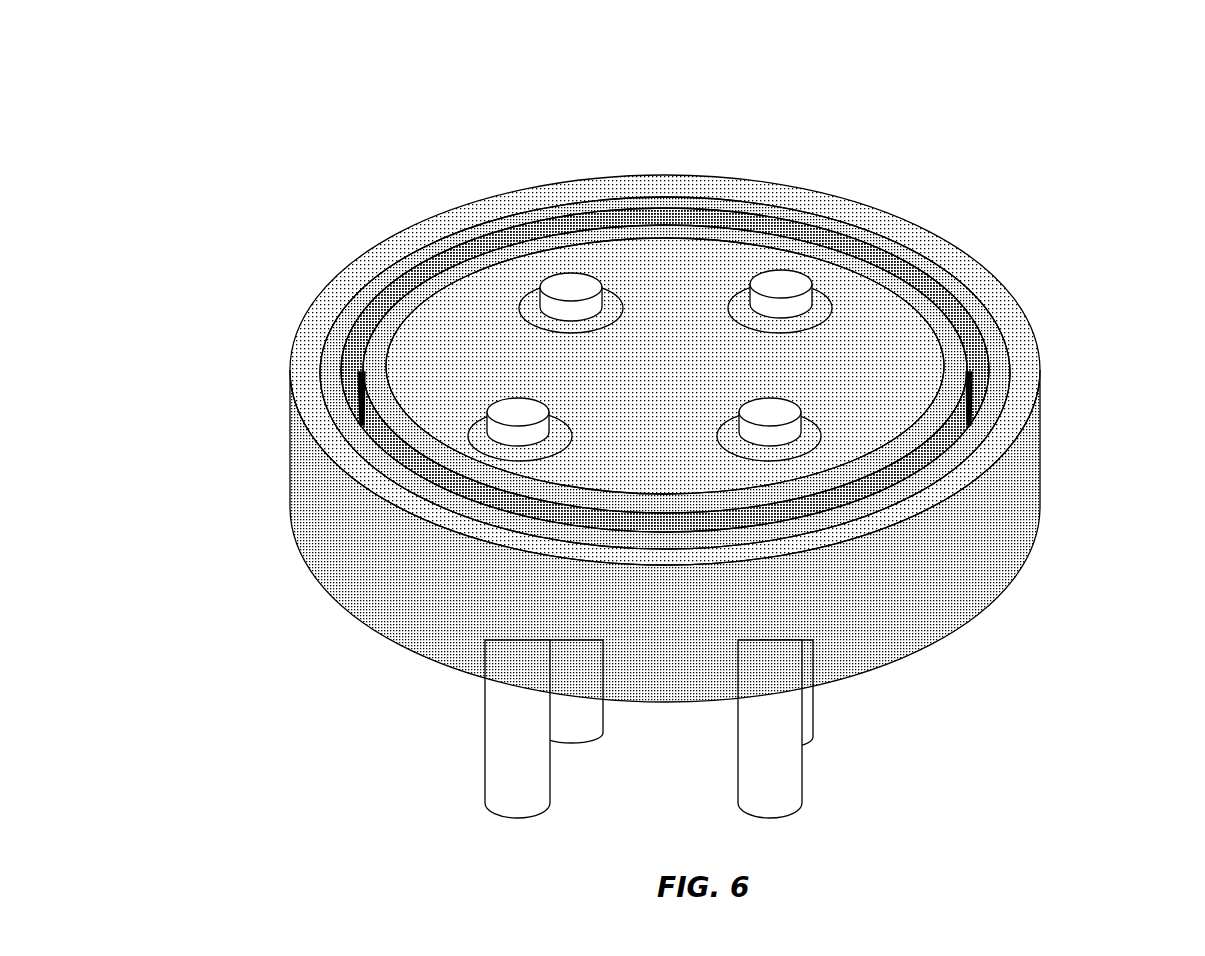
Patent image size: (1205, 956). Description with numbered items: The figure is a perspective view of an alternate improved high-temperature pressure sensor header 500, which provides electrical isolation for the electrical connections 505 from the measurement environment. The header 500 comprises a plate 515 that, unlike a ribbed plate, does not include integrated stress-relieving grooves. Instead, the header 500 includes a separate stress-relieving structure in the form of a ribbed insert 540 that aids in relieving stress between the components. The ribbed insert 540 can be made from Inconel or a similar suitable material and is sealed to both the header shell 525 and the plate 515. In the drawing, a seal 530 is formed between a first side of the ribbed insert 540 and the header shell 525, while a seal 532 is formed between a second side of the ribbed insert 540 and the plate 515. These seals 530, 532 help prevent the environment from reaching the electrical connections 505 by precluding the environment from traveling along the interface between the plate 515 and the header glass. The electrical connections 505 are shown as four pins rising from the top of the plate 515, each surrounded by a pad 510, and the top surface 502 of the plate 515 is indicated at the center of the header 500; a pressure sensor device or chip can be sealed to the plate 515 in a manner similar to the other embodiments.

The pressure sensor header 500 is at (694, 434).
The top surface 502 is at (708, 376).
The electrical connections 505 is at (772, 407).
The pin pads 510 is at (828, 308).
The plate 515 is at (455, 345).
The header shell 525 is at (455, 625).
The seal 530 is at (573, 202).
The seal 532 is at (730, 236).
The ribbed insert 540 is at (370, 347).